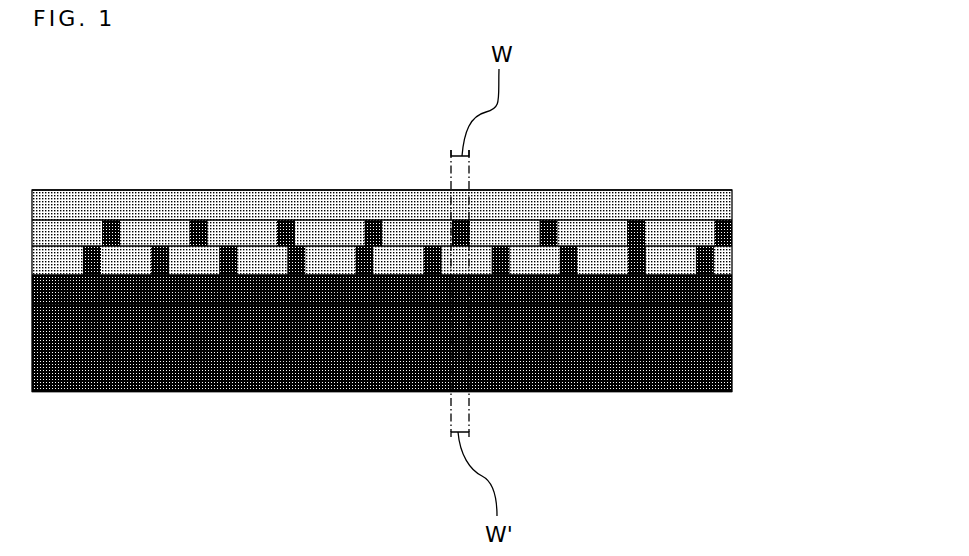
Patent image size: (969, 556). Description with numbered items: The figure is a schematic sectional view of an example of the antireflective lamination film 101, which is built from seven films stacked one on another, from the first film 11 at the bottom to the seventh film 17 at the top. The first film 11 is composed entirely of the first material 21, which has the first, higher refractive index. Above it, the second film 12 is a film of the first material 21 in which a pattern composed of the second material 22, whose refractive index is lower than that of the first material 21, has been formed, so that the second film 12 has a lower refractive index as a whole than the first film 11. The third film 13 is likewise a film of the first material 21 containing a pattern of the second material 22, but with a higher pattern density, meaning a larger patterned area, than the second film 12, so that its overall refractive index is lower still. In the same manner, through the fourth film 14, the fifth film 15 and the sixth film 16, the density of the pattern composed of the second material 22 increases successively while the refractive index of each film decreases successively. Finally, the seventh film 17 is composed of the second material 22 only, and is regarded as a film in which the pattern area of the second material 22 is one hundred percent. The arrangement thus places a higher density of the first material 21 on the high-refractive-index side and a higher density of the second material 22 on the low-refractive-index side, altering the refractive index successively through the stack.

The antireflective lamination film 101 is at (78, 86).
The first film 11 is at (747, 377).
The second film 12 is at (747, 348).
The third film 13 is at (747, 318).
The fourth film 14 is at (747, 290).
The fifth film 15 is at (747, 260).
The sixth film 16 is at (747, 233).
The seventh film 17 is at (747, 205).
The first material 21 is at (622, 385).
The second material 22 is at (600, 206).